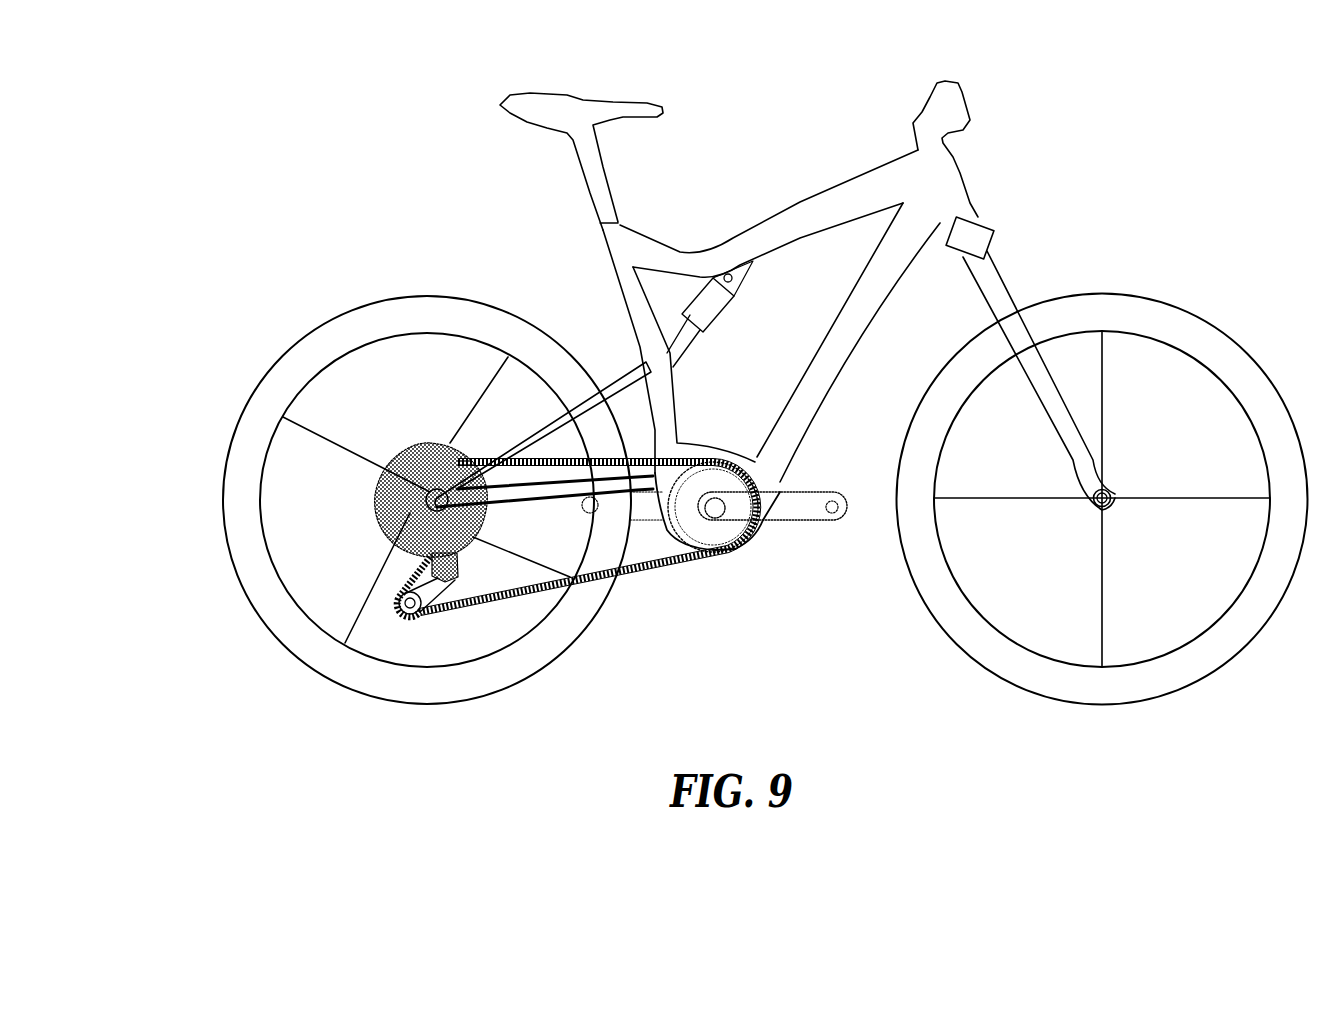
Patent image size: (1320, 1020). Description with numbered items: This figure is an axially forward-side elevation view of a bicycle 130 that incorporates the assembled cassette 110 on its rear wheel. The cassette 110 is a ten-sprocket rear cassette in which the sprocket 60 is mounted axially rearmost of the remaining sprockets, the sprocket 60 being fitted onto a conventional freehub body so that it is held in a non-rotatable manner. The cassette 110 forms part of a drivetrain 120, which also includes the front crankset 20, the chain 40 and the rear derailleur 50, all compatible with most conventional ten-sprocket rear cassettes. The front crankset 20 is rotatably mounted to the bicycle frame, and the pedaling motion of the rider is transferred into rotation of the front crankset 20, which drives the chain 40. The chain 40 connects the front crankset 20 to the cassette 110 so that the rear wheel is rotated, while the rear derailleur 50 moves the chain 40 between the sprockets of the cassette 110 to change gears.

The front crankset 20 is at (733, 532).
The chain 40 is at (662, 572).
The rear derailleur 50 is at (446, 584).
The sprocket 60 is at (373, 473).
The assembled cassette 110 is at (368, 518).
The drivetrain 120 is at (568, 443).
The bicycle 130 is at (1062, 227).